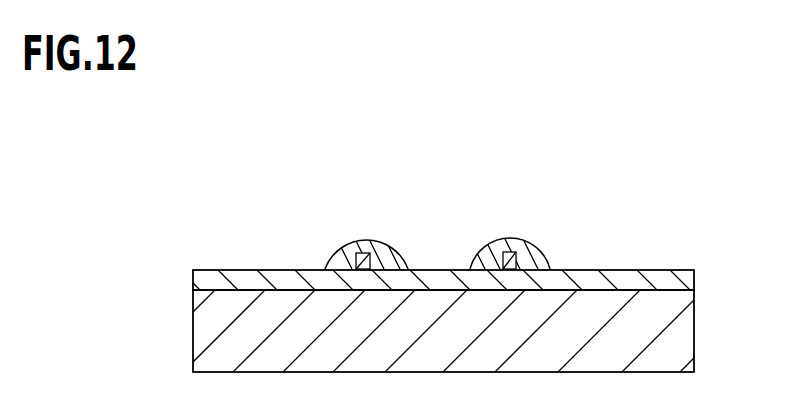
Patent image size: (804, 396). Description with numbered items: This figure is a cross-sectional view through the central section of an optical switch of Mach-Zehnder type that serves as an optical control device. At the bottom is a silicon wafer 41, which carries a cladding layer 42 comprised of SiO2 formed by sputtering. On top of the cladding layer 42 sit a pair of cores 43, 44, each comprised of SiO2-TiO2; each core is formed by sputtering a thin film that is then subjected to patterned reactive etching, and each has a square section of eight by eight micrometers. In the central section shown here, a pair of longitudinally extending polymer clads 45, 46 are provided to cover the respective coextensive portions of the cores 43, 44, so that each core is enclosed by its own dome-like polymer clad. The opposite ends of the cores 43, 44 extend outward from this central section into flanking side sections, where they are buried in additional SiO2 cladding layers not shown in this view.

The silicon wafer 41 is at (693, 332).
The cladding layer 42 is at (693, 276).
The core 43 is at (357, 258).
The core 44 is at (545, 266).
The polymer clad 45 is at (382, 248).
The polymer clad 46 is at (510, 240).